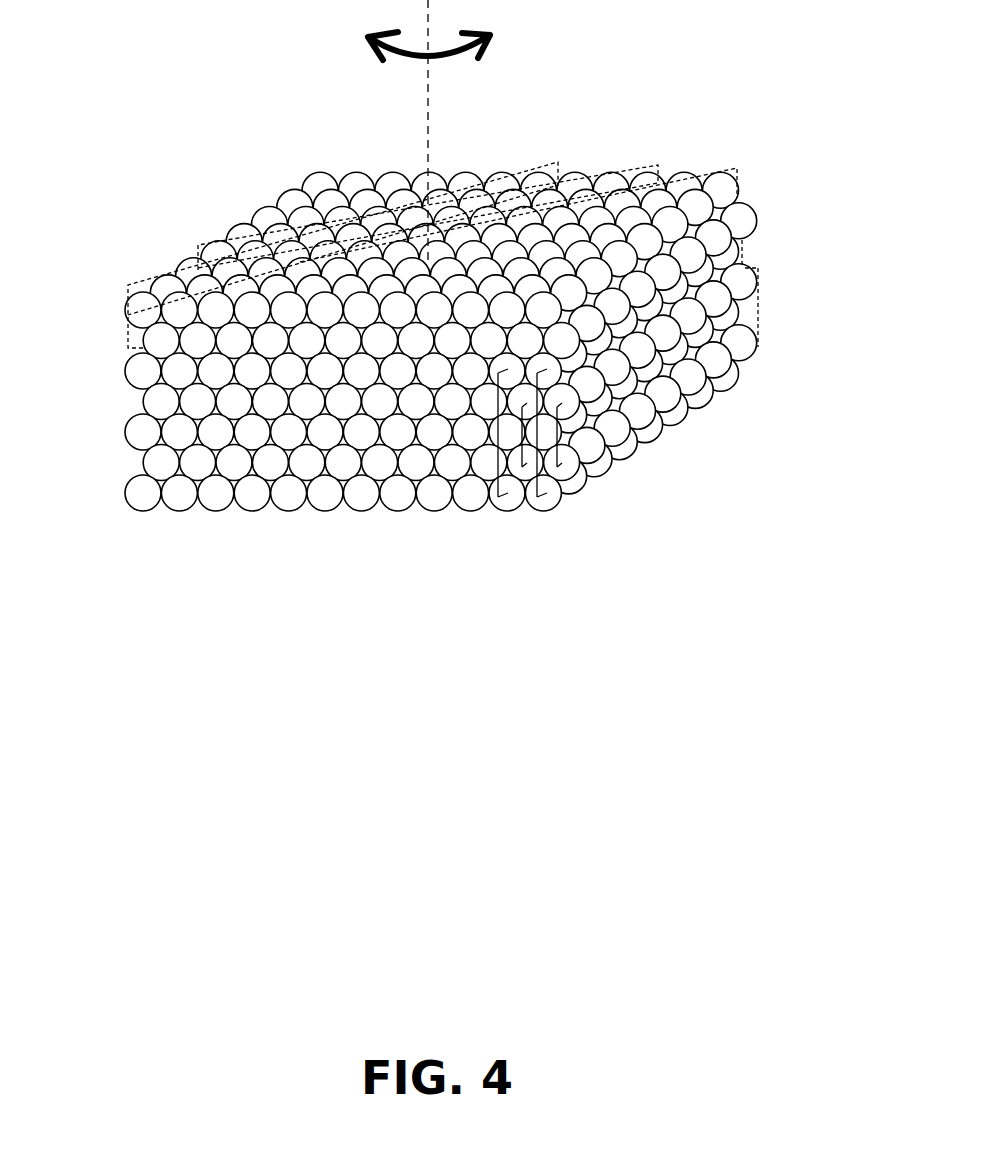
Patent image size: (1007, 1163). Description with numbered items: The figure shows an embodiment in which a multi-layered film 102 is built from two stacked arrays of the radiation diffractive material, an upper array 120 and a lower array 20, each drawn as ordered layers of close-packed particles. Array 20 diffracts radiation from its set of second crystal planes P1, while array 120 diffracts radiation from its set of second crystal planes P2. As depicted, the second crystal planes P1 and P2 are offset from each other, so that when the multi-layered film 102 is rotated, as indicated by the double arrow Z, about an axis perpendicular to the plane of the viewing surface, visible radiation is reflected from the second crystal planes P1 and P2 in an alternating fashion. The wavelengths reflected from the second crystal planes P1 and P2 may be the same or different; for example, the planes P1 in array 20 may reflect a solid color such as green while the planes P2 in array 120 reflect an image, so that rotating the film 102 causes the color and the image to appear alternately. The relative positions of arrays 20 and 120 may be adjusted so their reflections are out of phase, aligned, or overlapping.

The multi-layered film 102 is at (448, 318).
The array 120 is at (120, 292).
The array 20 is at (120, 358).
The second crystal planes P1 is at (522, 467).
The second crystal planes P2 is at (558, 162).
The double arrow Z is at (430, 132).